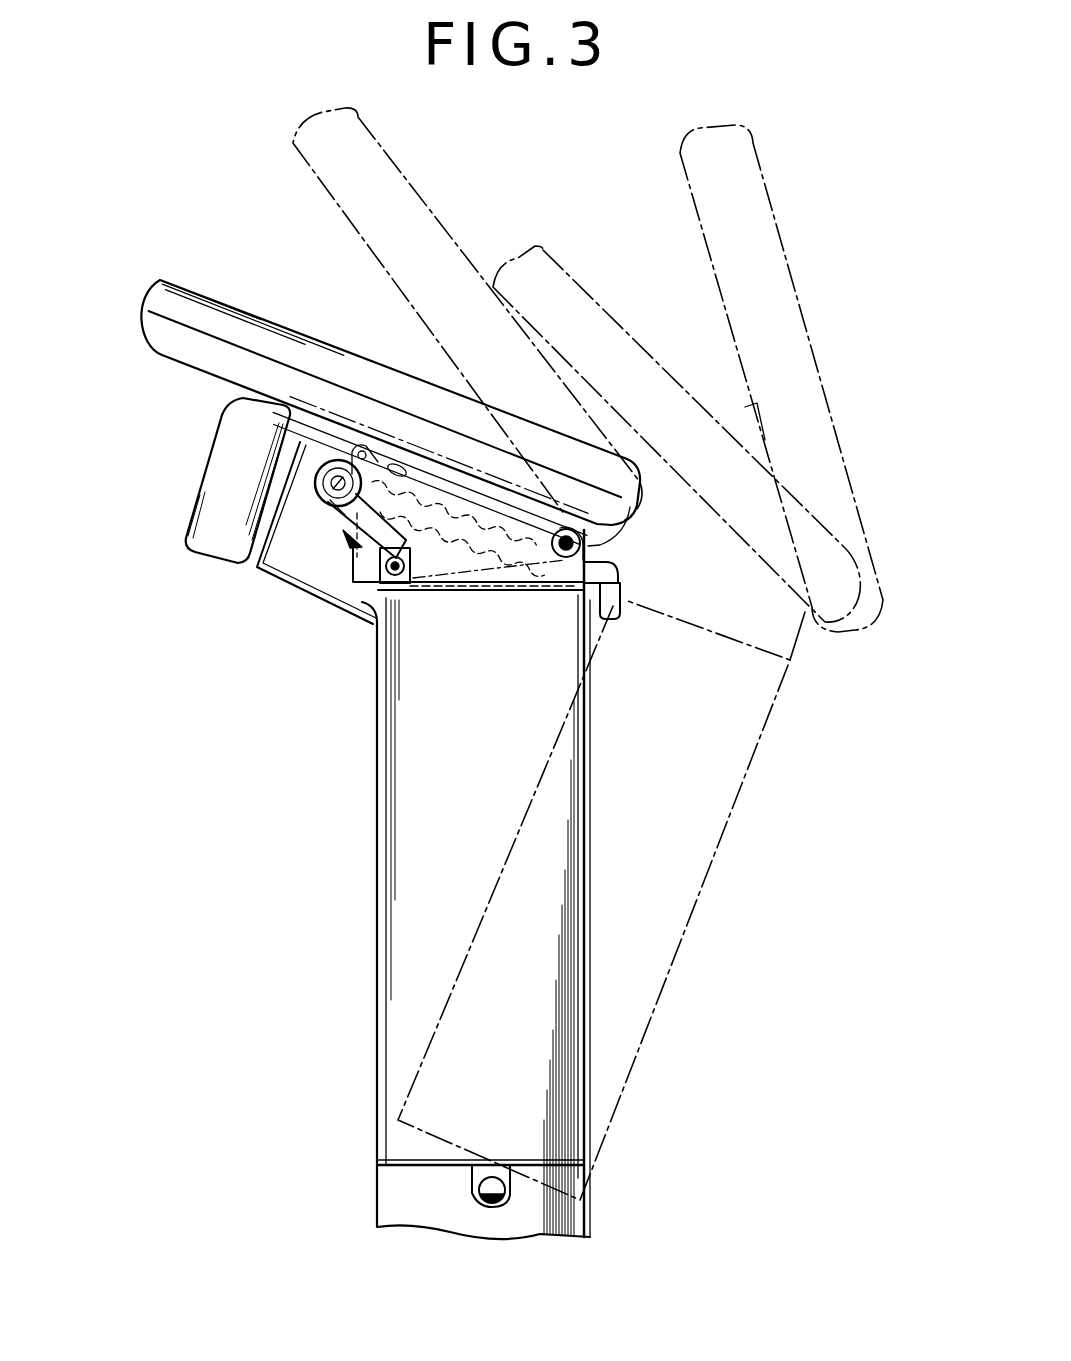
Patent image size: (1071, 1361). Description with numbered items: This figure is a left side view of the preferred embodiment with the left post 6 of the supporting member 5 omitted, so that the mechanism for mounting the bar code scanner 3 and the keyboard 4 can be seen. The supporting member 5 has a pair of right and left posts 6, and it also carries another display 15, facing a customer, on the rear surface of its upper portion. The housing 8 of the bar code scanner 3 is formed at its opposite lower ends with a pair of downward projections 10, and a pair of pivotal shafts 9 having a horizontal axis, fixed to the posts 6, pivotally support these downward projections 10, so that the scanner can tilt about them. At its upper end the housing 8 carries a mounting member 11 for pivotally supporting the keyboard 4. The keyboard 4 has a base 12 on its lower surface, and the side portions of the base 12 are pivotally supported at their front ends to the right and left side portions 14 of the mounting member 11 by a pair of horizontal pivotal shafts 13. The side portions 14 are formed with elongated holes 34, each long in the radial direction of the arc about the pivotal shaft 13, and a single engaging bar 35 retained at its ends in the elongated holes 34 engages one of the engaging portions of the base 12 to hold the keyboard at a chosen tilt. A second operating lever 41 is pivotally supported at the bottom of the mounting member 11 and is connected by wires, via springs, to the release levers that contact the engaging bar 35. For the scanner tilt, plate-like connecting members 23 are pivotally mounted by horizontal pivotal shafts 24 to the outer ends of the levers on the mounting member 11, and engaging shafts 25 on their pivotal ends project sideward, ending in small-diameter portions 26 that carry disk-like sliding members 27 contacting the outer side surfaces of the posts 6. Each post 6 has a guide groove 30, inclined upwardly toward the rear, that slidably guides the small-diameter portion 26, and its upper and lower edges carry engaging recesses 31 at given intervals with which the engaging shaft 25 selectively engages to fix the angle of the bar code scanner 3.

The bar code scanner 3 is at (583, 1090).
The keyboard 4 is at (163, 292).
The supporting member 5 is at (400, 1197).
The posts 6 is at (418, 1173).
The housing 8 is at (583, 977).
The pivotal shafts 9 is at (504, 1200).
The downward projections 10 is at (508, 1181).
The mounting member 11 is at (450, 582).
The base 12 is at (293, 400).
The pivotal shafts 13 is at (582, 545).
The side portions 14 is at (487, 582).
The display 15 is at (237, 422).
The connecting members 23 is at (357, 530).
The pivotal shafts 24 is at (380, 593).
The engaging shafts 25 is at (333, 497).
The small-diameter portions 26 is at (260, 577).
The sliding members 27 is at (317, 472).
The guide grooves 30 is at (455, 520).
The engaging recesses 31 is at (513, 540).
The elongated holes 34 is at (393, 450).
The engaging bar 35 is at (407, 458).
The second operating lever 41 is at (610, 590).